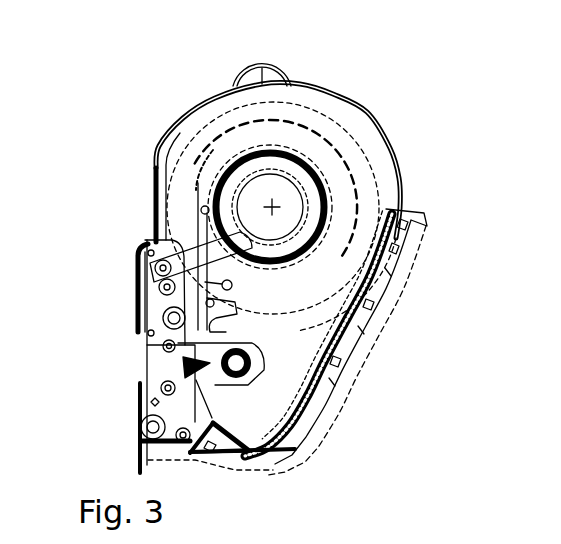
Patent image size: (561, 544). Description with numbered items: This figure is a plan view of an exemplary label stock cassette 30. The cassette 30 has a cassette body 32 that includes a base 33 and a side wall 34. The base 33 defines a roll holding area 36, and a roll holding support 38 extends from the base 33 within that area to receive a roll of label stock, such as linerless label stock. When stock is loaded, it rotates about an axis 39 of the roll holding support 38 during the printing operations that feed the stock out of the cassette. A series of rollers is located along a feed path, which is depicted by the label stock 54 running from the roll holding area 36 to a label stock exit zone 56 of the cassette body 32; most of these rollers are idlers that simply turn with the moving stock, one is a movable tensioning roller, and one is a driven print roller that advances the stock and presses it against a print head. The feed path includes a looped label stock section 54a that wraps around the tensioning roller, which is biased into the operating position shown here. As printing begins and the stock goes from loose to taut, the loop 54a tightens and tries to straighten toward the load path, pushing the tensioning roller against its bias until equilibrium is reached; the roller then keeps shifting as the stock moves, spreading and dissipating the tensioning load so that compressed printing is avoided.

The label stock cassette 30 is at (468, 134).
The cassette body 32 is at (349, 90).
The base 33 is at (190, 118).
The side wall 34 is at (396, 288).
The roll holding area 36 is at (359, 143).
The roll holding support 38 is at (322, 207).
The axis 39 is at (270, 207).
The label stock 54 is at (137, 282).
The looped label stock section 54a is at (187, 383).
The label stock exit zone 56 is at (121, 459).